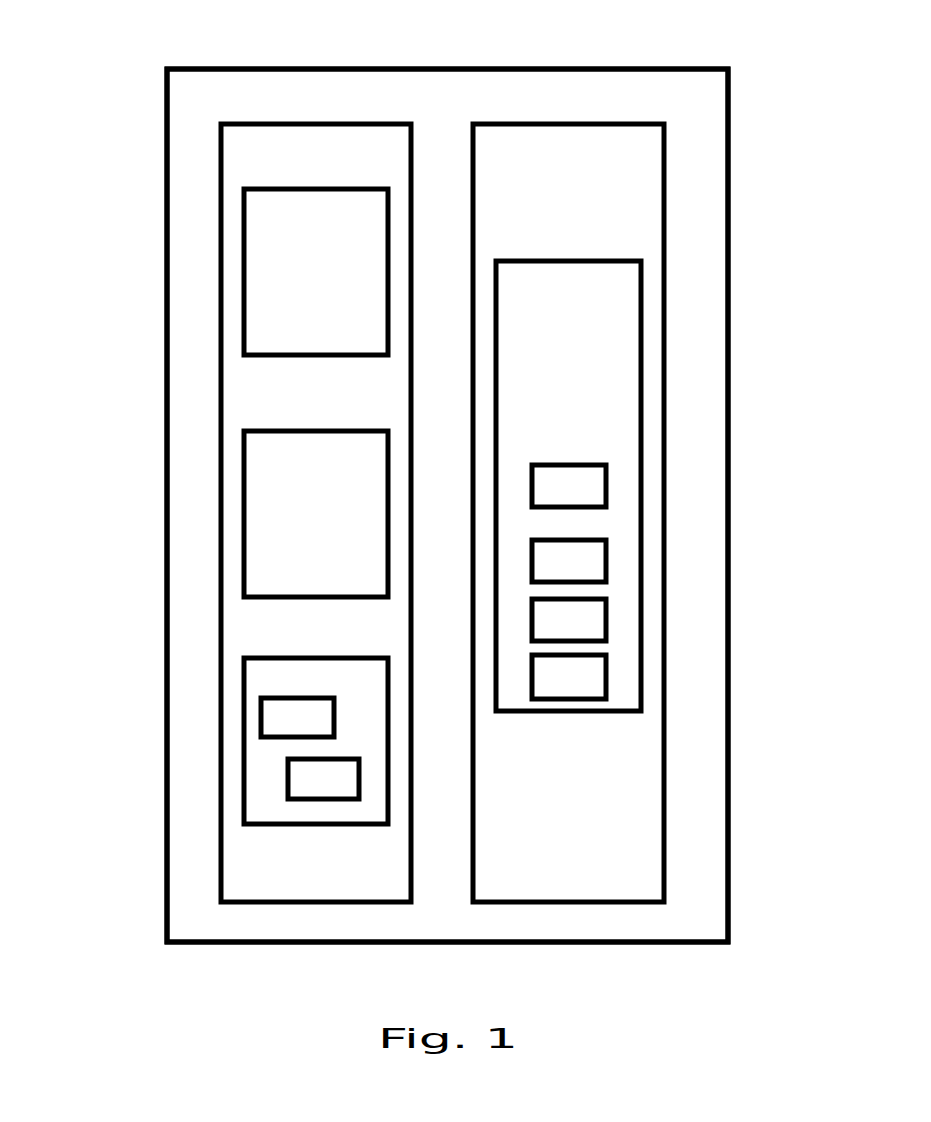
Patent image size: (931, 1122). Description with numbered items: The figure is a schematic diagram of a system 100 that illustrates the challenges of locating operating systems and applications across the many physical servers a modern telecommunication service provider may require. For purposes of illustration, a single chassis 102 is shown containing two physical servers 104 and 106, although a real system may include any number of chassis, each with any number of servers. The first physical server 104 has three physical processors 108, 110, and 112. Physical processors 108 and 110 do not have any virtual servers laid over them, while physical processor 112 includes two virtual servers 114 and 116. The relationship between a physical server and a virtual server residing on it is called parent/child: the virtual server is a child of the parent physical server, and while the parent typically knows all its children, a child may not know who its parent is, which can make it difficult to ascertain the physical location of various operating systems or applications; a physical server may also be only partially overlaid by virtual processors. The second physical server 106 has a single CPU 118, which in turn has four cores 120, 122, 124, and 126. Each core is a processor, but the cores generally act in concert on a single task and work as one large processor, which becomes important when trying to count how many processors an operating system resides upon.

The system 100 is at (133, 207).
The chassis 102 is at (441, 68).
The physical server 104 is at (218, 458).
The physical server 106 is at (667, 462).
The physical processor 108 is at (243, 273).
The physical processor 110 is at (243, 514).
The physical processor 112 is at (243, 741).
The virtual server 114 is at (258, 706).
The virtual server 116 is at (287, 795).
The CPU 118 is at (645, 425).
The core 120 is at (607, 484).
The core 122 is at (607, 559).
The core 124 is at (607, 622).
The core 126 is at (607, 675).